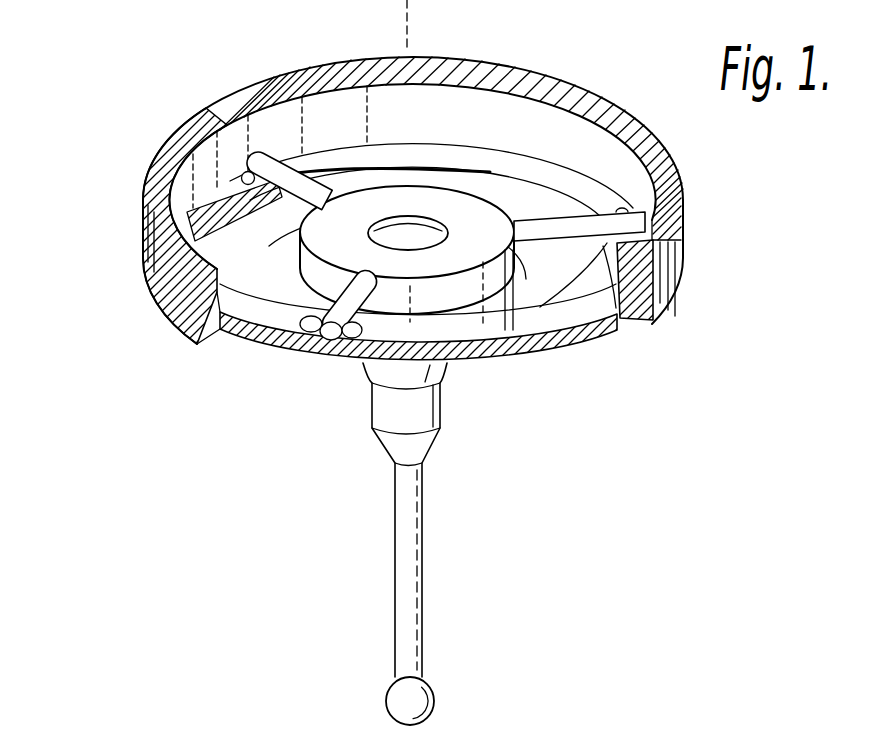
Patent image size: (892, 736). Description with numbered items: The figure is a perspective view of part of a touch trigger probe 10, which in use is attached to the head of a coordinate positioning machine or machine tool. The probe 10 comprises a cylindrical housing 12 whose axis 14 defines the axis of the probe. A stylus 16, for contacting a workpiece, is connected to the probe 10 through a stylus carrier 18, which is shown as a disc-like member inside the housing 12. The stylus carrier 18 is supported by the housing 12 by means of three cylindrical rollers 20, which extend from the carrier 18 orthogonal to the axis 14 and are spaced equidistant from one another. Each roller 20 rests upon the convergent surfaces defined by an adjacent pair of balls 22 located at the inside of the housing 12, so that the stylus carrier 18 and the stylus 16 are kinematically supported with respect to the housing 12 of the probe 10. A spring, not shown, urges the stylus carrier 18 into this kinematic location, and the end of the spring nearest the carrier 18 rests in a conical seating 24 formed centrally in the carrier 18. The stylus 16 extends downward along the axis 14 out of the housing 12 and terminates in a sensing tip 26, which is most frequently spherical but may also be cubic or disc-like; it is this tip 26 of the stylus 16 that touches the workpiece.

The touch probe 10 is at (106, 208).
The cylindrical housing 12 is at (648, 147).
The axis 14 is at (410, 32).
The stylus 16 is at (418, 553).
The stylus carrier 18 is at (475, 288).
The cylindrical roller 20 is at (585, 234).
The ball 22 is at (246, 173).
The conical seating 24 is at (413, 237).
The sensing tip 26 is at (397, 699).